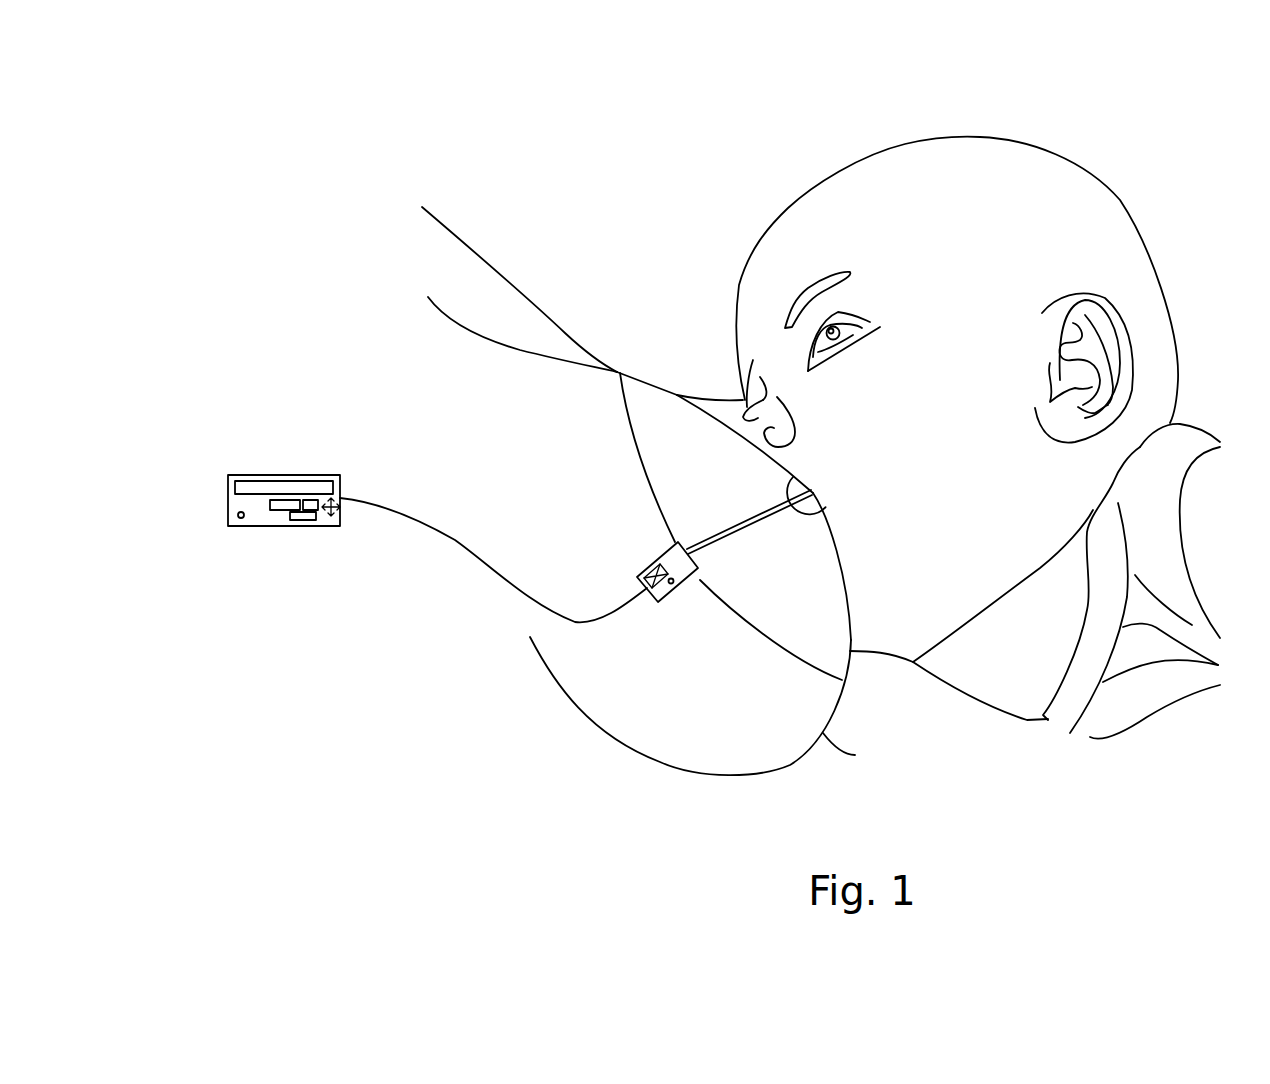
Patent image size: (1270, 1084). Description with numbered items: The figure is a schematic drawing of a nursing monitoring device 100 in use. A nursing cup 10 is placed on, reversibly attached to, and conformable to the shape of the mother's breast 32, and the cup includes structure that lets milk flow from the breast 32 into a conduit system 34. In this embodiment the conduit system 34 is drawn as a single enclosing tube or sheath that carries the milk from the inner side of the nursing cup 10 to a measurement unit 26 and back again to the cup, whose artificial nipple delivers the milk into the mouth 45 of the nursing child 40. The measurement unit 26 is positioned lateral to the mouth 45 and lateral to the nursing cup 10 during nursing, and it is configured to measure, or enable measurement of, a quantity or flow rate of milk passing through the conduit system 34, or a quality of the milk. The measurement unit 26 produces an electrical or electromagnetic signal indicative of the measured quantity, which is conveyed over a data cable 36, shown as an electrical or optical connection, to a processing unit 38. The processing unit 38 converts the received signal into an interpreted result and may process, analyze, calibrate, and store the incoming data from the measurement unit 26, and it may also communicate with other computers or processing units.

The nursing monitoring device 100 is at (532, 558).
The nursing cup 10 is at (709, 558).
The measurement unit 26 is at (688, 577).
The breast 32 is at (720, 775).
The conduit system 34 is at (763, 527).
The data cable 36 is at (462, 542).
The processing unit 38 is at (233, 508).
The infant 40 is at (1087, 193).
The mouth 45 is at (835, 512).